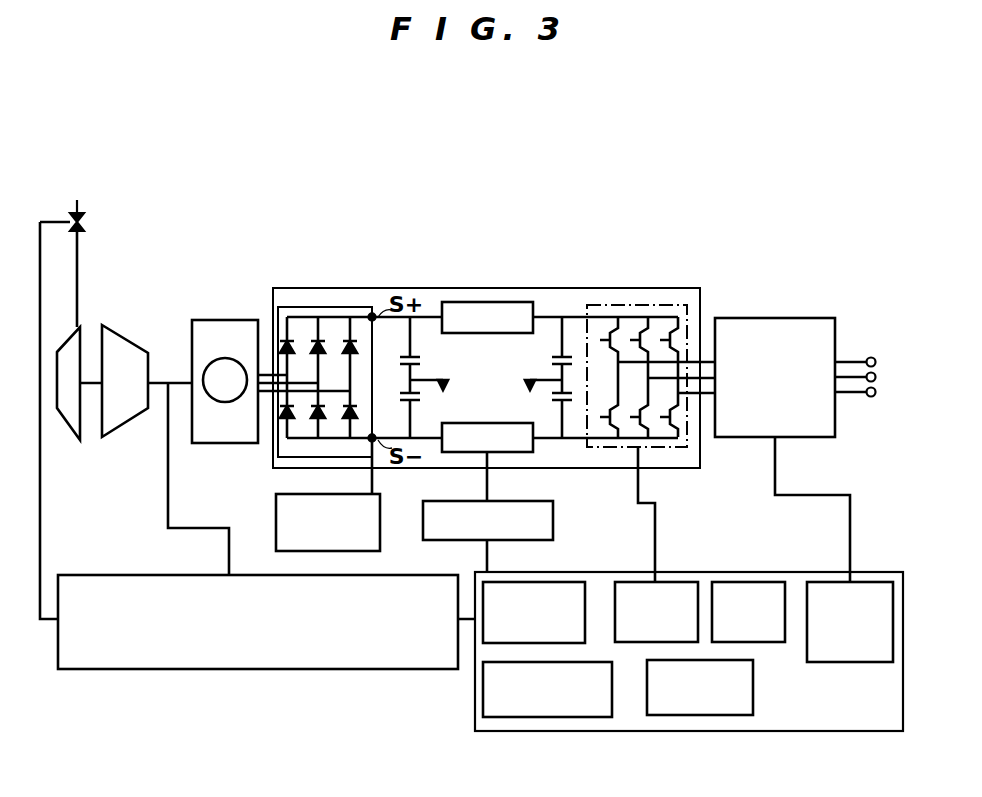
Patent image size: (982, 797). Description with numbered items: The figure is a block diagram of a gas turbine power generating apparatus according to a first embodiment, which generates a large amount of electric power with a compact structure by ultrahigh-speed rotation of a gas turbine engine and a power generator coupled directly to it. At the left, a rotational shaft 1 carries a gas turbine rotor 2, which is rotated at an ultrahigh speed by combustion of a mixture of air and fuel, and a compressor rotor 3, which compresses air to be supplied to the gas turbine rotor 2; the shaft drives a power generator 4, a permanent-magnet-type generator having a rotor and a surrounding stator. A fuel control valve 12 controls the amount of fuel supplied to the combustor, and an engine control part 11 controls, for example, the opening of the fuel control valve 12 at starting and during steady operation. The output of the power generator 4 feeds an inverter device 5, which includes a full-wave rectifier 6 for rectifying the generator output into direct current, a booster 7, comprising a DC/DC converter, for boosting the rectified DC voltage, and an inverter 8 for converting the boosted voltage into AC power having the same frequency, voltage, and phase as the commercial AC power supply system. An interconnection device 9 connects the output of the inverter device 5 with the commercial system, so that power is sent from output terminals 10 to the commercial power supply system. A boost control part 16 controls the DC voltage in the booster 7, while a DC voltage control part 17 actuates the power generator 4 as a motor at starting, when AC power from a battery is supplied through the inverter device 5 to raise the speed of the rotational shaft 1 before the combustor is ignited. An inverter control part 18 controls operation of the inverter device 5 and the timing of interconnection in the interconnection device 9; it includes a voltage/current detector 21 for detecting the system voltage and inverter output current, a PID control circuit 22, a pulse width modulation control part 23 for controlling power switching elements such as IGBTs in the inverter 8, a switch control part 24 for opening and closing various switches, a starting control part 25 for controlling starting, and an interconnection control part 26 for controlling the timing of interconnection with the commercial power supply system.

The rotational shaft 1 is at (157, 386).
The gas turbine rotor 2 is at (63, 430).
The compressor rotor 3 is at (130, 346).
The power generator 4 is at (226, 318).
The inverter device 5 is at (380, 288).
The rectifier 6 is at (322, 307).
The booster 7 is at (485, 334).
The inverter 8 is at (620, 305).
The interconnection device 9 is at (776, 318).
The output terminals 10 is at (876, 358).
The engine control part 11 is at (152, 670).
The fuel control valve 12 is at (74, 212).
The boost control part 16 is at (553, 503).
The DC voltage control part 17 is at (276, 506).
The inverter control part 18 is at (540, 732).
The voltage/current detector 21 is at (822, 582).
The PID control circuit 22 is at (735, 582).
The pulse width modulation control part 23 is at (672, 582).
The switch control part 24 is at (545, 582).
The starting control part 25 is at (483, 692).
The interconnection control part 26 is at (753, 688).